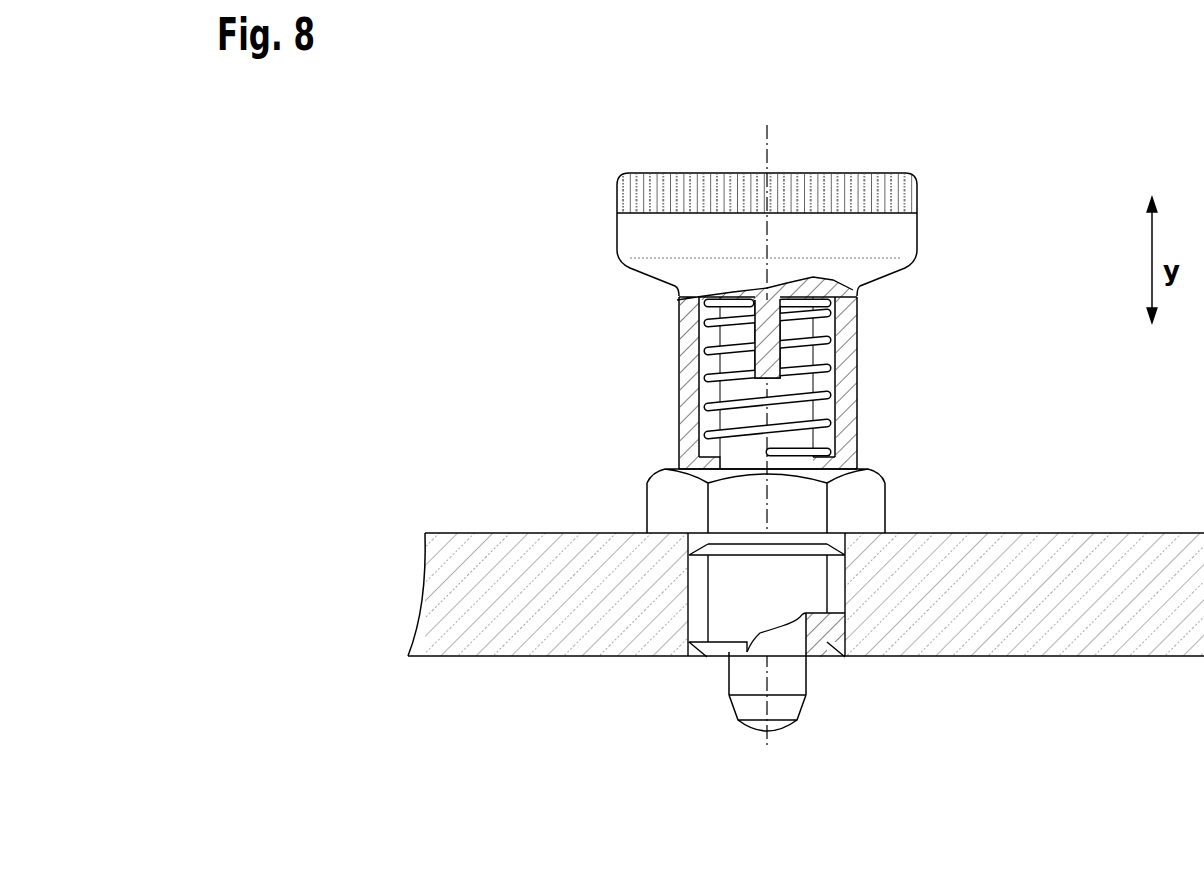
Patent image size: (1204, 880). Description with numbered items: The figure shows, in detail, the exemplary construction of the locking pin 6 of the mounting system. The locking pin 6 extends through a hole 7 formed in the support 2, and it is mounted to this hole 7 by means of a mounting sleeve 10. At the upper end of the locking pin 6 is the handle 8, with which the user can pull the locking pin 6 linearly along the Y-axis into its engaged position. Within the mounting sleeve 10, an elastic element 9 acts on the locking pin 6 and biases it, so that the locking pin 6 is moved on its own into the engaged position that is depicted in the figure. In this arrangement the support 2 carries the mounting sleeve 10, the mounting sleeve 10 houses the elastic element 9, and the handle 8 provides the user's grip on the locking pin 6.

The support 2 is at (505, 632).
The locking pin 6 is at (793, 677).
The hole 7 is at (690, 655).
The handle 8 is at (900, 196).
The elastic element 9 is at (826, 398).
The mounting sleeve 10 is at (858, 498).